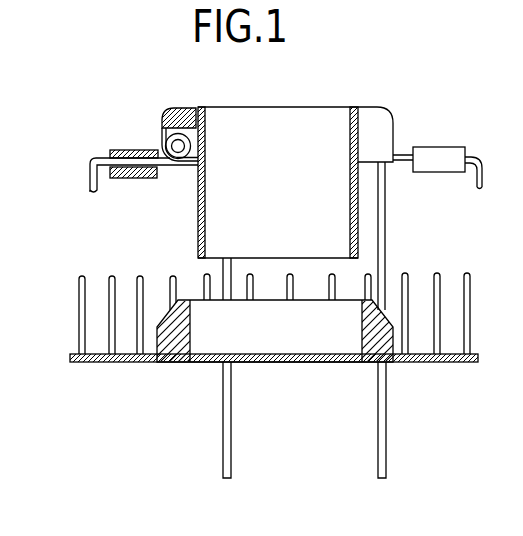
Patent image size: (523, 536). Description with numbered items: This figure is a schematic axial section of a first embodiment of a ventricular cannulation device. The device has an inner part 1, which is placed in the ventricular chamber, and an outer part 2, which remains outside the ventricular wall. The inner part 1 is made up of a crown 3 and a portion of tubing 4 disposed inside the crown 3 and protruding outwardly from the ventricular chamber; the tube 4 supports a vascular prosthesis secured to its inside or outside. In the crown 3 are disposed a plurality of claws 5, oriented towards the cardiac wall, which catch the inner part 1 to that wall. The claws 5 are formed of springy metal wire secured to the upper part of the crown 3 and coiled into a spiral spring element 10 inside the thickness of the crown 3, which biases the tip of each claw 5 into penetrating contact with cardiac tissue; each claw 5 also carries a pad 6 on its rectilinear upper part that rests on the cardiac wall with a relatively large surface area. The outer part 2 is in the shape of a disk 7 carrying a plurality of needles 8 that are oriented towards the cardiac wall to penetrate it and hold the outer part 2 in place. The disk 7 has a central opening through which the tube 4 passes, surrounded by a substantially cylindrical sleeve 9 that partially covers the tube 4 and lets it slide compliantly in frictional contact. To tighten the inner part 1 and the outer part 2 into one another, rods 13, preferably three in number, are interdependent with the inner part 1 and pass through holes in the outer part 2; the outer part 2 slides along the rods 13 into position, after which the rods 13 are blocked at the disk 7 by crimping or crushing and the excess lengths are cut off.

The inner part 1 is at (393, 100).
The outer part 2 is at (296, 347).
The crown 3 is at (175, 107).
The portion of tubing 4 is at (377, 220).
The claws 5 is at (89, 193).
The pad 6 is at (112, 148).
The disk 7 is at (478, 362).
The needles 8 is at (472, 280).
The sleeve 9 is at (160, 325).
The spiral spring element 10 is at (162, 136).
The rods 13 is at (231, 462).